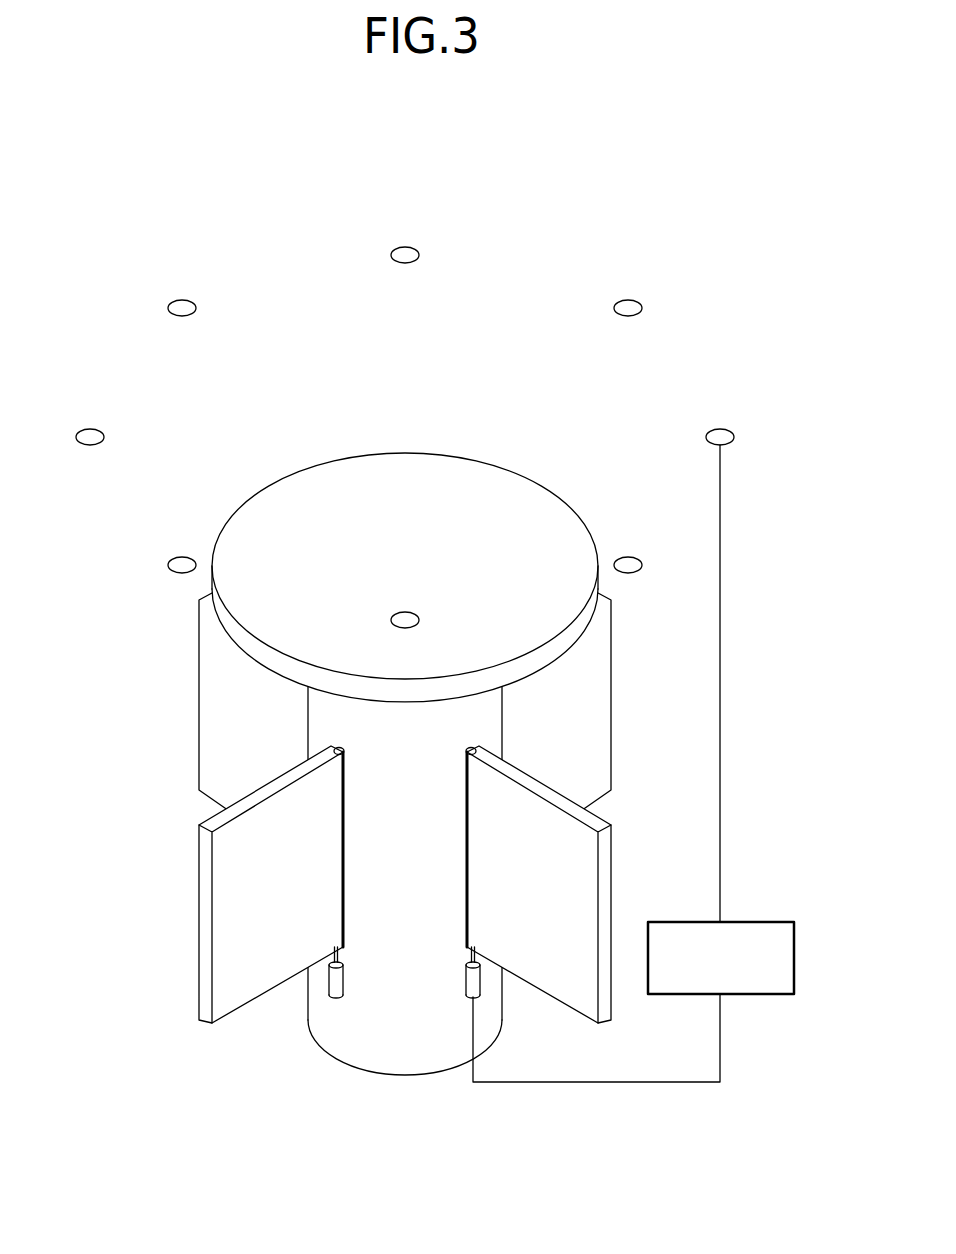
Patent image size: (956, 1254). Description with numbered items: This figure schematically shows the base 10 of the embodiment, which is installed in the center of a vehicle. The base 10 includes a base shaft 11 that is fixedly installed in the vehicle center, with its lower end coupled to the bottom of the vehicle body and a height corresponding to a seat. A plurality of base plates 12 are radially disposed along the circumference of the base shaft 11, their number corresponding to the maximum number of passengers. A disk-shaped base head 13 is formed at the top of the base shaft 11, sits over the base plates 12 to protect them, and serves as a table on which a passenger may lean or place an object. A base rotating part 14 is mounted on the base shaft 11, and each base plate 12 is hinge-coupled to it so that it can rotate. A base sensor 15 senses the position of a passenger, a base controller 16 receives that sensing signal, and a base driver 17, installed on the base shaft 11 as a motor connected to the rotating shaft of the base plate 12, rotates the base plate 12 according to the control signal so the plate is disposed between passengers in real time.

The base 10 is at (758, 149).
The base shaft 11 is at (333, 713).
The base plate 12 is at (207, 885).
The base head 13 is at (295, 490).
The base rotating part 14 is at (338, 750).
The base sensor 15 is at (733, 430).
The base controller 16 is at (765, 921).
The base driver 17 is at (327, 982).